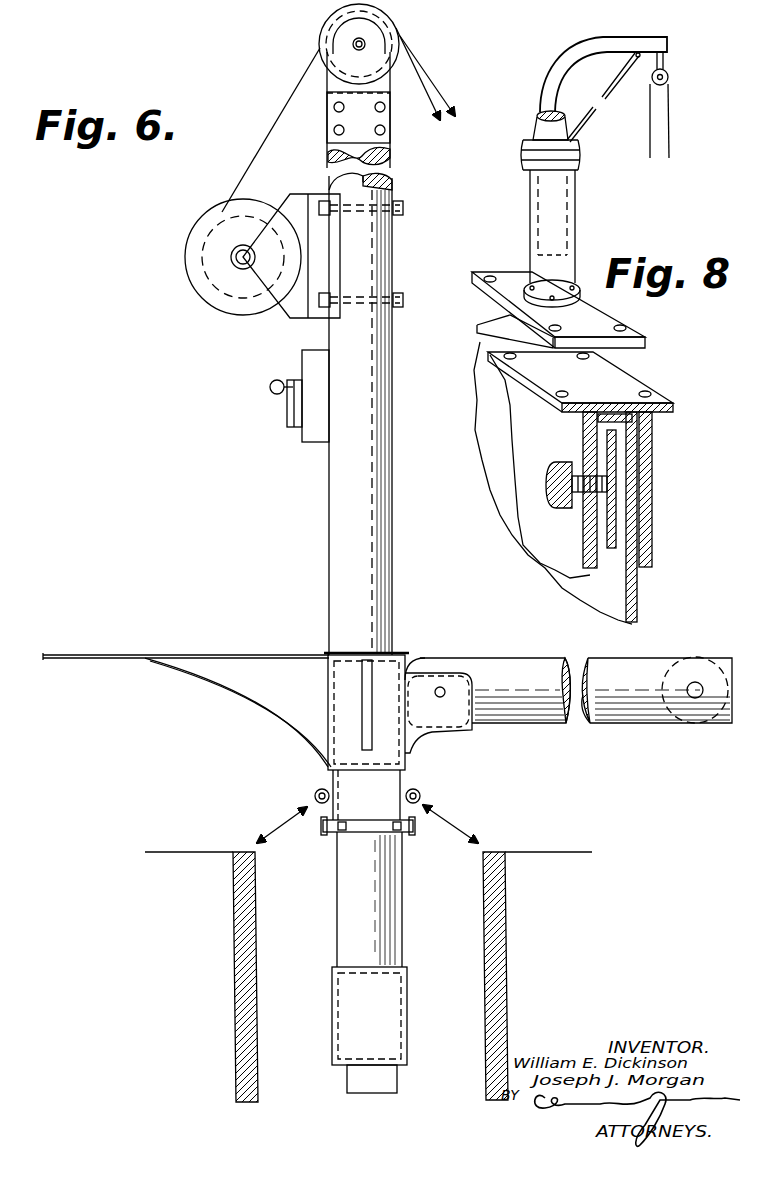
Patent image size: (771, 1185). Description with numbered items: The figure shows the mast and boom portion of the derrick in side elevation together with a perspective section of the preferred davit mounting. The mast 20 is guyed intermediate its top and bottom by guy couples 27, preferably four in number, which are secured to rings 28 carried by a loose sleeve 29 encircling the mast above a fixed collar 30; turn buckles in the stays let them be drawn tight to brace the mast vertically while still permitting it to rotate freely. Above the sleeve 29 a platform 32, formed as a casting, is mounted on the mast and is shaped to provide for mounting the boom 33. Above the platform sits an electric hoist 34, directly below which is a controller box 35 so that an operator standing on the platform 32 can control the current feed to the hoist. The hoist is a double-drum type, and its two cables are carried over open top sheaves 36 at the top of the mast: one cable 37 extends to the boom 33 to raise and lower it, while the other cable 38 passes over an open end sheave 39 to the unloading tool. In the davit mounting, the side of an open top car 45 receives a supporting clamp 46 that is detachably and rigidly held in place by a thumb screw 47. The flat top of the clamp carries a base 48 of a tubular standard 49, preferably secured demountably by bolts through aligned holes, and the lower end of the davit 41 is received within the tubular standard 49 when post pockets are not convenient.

In FIG. 6, the mast 20 is at (383, 466).
In FIG. 6, the guy couples 27 is at (296, 812).
In FIG. 6, the rings 28 is at (318, 789).
In FIG. 6, the loose sleeve 29 is at (332, 810).
In FIG. 6, the fixed collar 30 is at (382, 843).
In FIG. 6, the platform 32 is at (187, 658).
In FIG. 6, the boom 33 is at (533, 636).
In FIG. 6, the electric hoist 34 is at (192, 288).
In FIG. 6, the controller box 35 is at (302, 354).
In FIG. 6, the open top sheaves 36 is at (320, 40).
In FIG. 6, the cable 37 is at (444, 78).
In FIG. 6, the cable 38 is at (452, 106).
In FIG. 6, the open end sheave 39 is at (686, 723).
In FIG. 8, the davit 41 is at (541, 100).
In FIG. 8, the side of an open top car 45 is at (630, 563).
In FIG. 8, the supporting clamp 46 is at (627, 383).
In FIG. 8, the thumb screw 47 is at (549, 485).
In FIG. 8, the base 48 is at (613, 319).
In FIG. 8, the tubular standard 49 is at (543, 185).